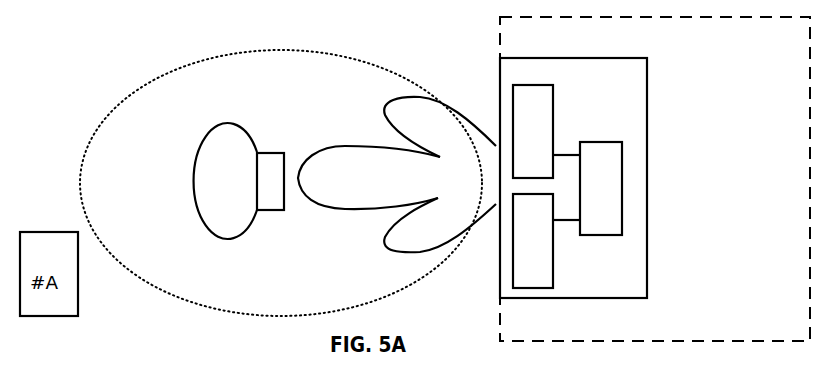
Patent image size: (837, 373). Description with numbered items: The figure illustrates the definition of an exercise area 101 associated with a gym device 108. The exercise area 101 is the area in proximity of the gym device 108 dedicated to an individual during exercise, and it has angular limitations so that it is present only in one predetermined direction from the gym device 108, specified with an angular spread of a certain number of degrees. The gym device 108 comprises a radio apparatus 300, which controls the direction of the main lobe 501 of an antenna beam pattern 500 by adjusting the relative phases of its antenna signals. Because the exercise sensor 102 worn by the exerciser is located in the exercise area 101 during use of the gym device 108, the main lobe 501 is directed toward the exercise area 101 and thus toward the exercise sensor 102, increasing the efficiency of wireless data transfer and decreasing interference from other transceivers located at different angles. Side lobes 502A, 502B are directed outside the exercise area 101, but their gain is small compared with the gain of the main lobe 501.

The exercise area 101 is at (100, 125).
The exercise sensor 102 is at (203, 160).
The antenna beam pattern 500 is at (312, 125).
The main lobe 501 is at (338, 145).
The side lobe 502A is at (425, 97).
The side lobe 502B is at (385, 241).
The radio apparatus 300 is at (648, 107).
The gym device 108 is at (688, 331).